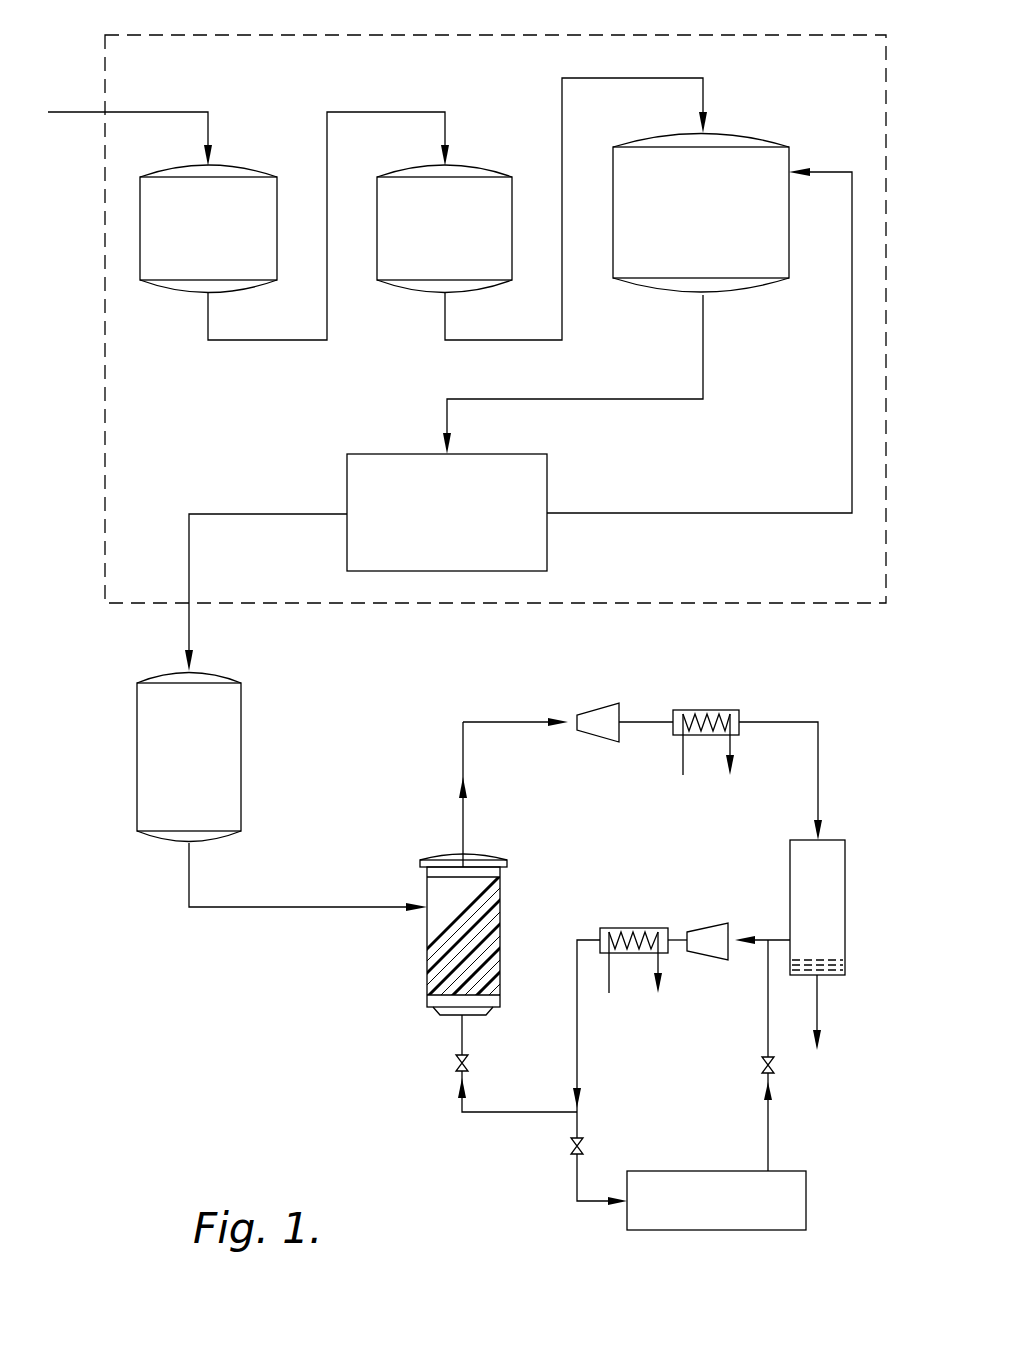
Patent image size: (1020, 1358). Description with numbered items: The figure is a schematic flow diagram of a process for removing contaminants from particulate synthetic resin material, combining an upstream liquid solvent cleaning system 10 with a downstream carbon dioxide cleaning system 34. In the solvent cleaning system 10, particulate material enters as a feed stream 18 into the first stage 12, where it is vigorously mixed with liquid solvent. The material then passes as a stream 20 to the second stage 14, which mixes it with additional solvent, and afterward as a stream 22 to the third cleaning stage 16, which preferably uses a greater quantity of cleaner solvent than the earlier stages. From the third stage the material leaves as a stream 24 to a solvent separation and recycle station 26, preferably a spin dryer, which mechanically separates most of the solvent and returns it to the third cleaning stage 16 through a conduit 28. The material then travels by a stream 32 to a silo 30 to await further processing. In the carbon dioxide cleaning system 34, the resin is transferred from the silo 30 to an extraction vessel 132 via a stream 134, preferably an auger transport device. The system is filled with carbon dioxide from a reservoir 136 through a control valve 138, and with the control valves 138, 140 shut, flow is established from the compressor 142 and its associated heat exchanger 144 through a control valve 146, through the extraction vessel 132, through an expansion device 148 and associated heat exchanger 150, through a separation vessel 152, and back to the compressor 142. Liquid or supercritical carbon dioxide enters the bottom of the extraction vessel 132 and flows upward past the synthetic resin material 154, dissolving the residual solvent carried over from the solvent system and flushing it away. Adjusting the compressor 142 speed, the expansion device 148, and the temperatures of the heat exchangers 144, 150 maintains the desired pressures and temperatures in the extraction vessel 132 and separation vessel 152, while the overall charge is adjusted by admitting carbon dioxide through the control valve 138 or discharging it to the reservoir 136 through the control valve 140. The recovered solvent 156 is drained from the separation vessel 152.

The liquid solvent cleaning system 10 is at (628, 20).
The first stage 12 is at (233, 165).
The second stage 14 is at (475, 165).
The third cleaning stage 16 is at (758, 132).
The feed stream 18 is at (133, 112).
The stream 20 is at (388, 112).
The stream 22 is at (685, 78).
The stream 24 is at (675, 399).
The solvent separation and recycle station 26 is at (532, 454).
The conduit 28 is at (777, 513).
The silo 30 is at (242, 716).
The stream 32 is at (262, 514).
The carbon dioxide cleaning system 34 is at (388, 1072).
The extraction vessel 132 is at (454, 921).
The stream 134 is at (322, 907).
The reservoir 136 is at (730, 1230).
The control valve 138 is at (775, 1068).
The control valve 140 is at (570, 1147).
The compressor 142 is at (715, 923).
The heat exchanger 144 is at (630, 928).
The control valve 146 is at (467, 1063).
The expansion device 148 is at (598, 705).
The heat exchanger 150 is at (722, 710).
The separation vessel 152 is at (838, 848).
The synthetic resin material 154 is at (492, 907).
The solvent 156 is at (820, 1013).